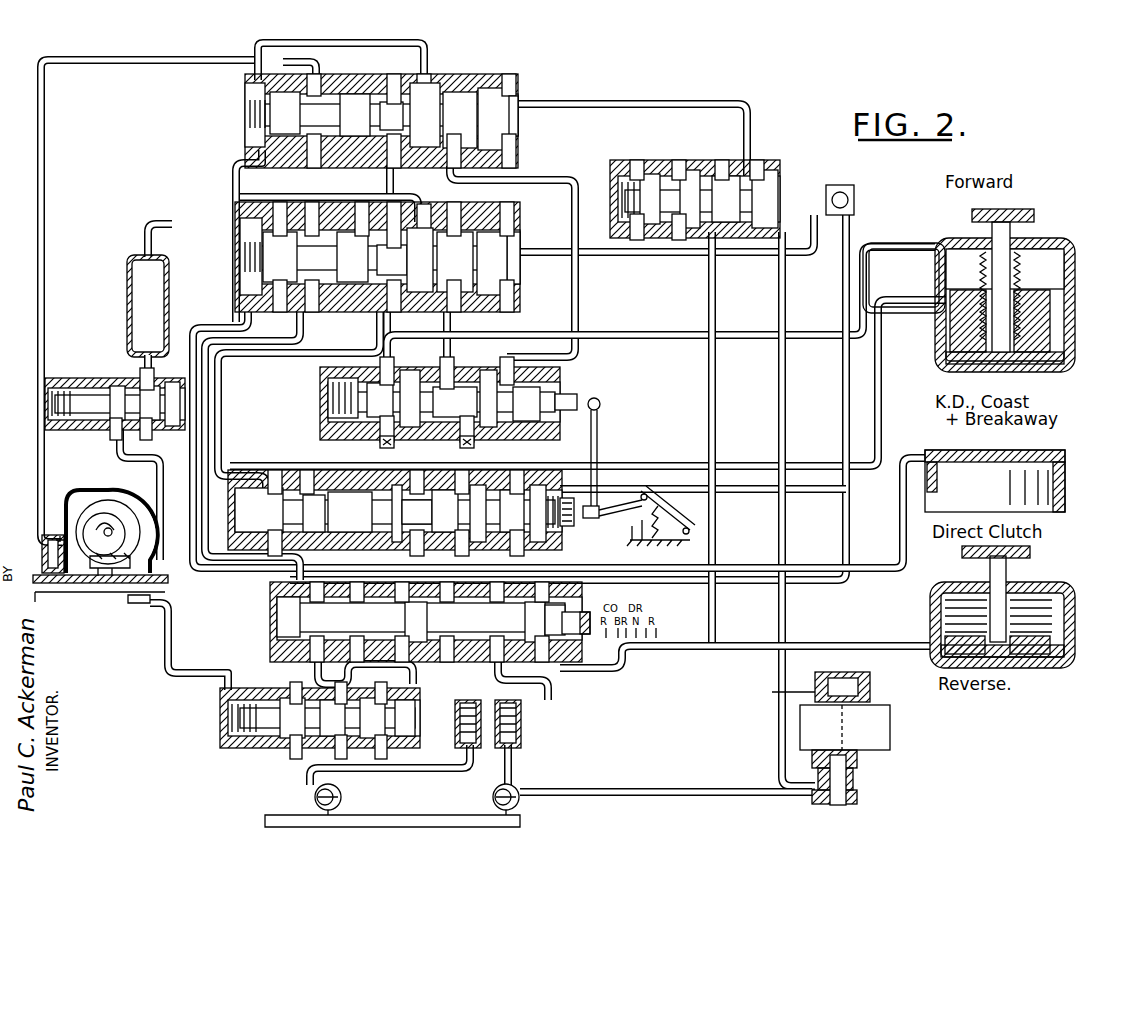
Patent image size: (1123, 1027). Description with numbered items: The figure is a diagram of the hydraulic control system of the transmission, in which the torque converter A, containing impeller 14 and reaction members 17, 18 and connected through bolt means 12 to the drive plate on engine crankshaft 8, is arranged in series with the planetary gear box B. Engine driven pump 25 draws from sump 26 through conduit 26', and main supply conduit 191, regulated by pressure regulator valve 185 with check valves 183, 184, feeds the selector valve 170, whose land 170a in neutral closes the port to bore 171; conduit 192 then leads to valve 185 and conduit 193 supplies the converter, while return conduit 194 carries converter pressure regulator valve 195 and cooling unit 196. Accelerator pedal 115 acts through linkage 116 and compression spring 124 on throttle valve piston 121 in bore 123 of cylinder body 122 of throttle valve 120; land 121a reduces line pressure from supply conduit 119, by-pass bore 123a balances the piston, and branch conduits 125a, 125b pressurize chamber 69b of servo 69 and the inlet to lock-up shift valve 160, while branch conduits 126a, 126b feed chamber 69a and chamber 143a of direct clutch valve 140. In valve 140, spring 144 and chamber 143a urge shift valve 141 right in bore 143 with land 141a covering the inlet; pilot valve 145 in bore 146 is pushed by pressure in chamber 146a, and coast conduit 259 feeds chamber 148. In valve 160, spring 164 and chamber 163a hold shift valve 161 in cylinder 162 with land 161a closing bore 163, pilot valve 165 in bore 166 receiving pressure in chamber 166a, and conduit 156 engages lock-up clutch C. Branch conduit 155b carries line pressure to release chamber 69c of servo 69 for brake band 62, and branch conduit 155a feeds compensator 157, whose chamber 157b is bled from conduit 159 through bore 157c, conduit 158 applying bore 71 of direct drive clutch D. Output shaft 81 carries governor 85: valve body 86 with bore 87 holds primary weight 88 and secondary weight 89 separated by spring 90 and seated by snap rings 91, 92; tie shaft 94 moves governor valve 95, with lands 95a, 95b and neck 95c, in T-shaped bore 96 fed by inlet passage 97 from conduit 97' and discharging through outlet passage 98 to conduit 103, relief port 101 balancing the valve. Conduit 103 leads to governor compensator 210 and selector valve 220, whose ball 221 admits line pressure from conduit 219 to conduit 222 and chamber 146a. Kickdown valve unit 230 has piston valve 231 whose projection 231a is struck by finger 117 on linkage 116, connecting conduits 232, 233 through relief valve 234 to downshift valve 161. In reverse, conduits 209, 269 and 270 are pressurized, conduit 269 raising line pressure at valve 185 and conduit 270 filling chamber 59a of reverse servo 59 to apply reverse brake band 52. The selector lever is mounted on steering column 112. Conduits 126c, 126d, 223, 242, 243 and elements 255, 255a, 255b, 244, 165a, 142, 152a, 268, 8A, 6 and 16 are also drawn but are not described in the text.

The suction conduit 156 is at (144, 60).
The line pressure conduit 126c is at (254, 52).
The conduit 161a is at (289, 78).
The conduit 223 is at (656, 104).
The conduit 222 is at (642, 258).
The conduit 233 is at (450, 172).
The conduit 232 is at (362, 157).
The conduit 126d is at (320, 194).
The conduit 126b is at (272, 283).
The conduit 242 is at (387, 339).
The conduit 243 is at (467, 339).
The conduit 155b is at (630, 332).
The conduit 126a is at (880, 338).
The conduit 219 is at (844, 408).
The conduit 125a is at (881, 432).
The governor pressure conduit 209 is at (640, 588).
The conduit 103 is at (775, 600).
The conduit 270 is at (548, 673).
The conduit 159 is at (262, 579).
The conduit 259 is at (306, 434).
The conduit 125b is at (228, 174).
The accumulator 196 is at (126, 304).
The conduit 193 is at (228, 671).
The conduit 192 is at (365, 662).
The conduit 191 is at (501, 670).
The conduit 194 is at (158, 468).
The conduit 97' is at (666, 780).
The shift valve 160 is at (382, 102).
The spring 164 is at (240, 118).
The valve spool 161 is at (339, 115).
The valve land 163a is at (248, 130).
The port 163 is at (316, 82).
The valve land 162 is at (374, 80).
The port 165a is at (440, 82).
The valve plug 165 is at (443, 115).
The valve land 166 is at (480, 80).
The chamber 166a is at (528, 100).
The shift valve 140 is at (371, 251).
The spring 144 is at (244, 248).
The valve land 143a is at (254, 260).
The port 142 is at (276, 219).
The valve land 141a is at (319, 219).
The valve spool 141 is at (334, 257).
The valve land 143 is at (375, 238).
The port 148 is at (432, 241).
The valve land 146 is at (470, 241).
The chamber 146a is at (533, 240).
The valve plug 145 is at (477, 248).
The regulator valve 231 is at (450, 400).
The spring 255 is at (328, 391).
The port 255a is at (291, 360).
The port 255b is at (349, 362).
The check valve 244 is at (404, 441).
The check valve 234 is at (488, 441).
The valve stem 230 is at (569, 386).
The valve land 231a is at (575, 398).
The throttle valve 121 is at (402, 456).
The valve land 152a is at (259, 505).
The valve plug 157 is at (246, 510).
The port 157b is at (219, 490).
The port 157c is at (219, 529).
The conduit 155a is at (257, 413).
The valve land 121a is at (421, 512).
The throttle valve plunger 120 is at (508, 502).
The valve land 123 is at (524, 505).
The spring 123a is at (539, 526).
The plunger 124 is at (582, 507).
The port 122 is at (493, 501).
The port 119 is at (404, 548).
The throttle lever 117 is at (606, 426).
The link 116 is at (626, 517).
The lever 115 is at (663, 515).
The manual valve 170 is at (448, 622).
The valve land 171 is at (322, 617).
The valve spool 170a is at (475, 622).
The servo valve 183 is at (337, 721).
The valve land 185 is at (411, 716).
The servo 184 is at (525, 724).
The conduit 268 is at (280, 666).
The conduit 269 is at (284, 680).
The sump 26 is at (364, 812).
The pump 25 is at (344, 798).
The sump 26' is at (528, 800).
The conduit 8A is at (521, 792).
The pressure regulator valve 195 is at (100, 378).
The pump A is at (112, 528).
The pump housing 14 is at (108, 532).
The pump rotor 12 is at (100, 534).
The pump vane 17 is at (103, 521).
The pump shaft 18 is at (140, 494).
The inlet C is at (54, 534).
The outlet B is at (42, 540).
The conduit 8 is at (11, 540).
The conduit 6 is at (38, 258).
The sump 16 is at (100, 593).
The valve 210 is at (782, 160).
The check valve body 221 is at (850, 200).
The check ball 220 is at (841, 194).
The forward clutch 69 is at (987, 288).
The piston 69c is at (1060, 266).
The spring 69a is at (1062, 330).
The clutch plate 69b is at (1064, 362).
The clutch shaft 62 is at (1033, 212).
The direct clutch D is at (1006, 469).
The band 71 is at (996, 452).
The reverse clutch 59 is at (1019, 614).
The clutch shaft 52 is at (1031, 556).
The clutch plate 59a is at (1066, 650).
The governor shaft 81 is at (831, 735).
The governor body 85 is at (804, 678).
The conduit 90 is at (775, 691).
The governor weight 94 is at (845, 727).
The governor valve 95 is at (859, 790).
The valve land 95a is at (857, 764).
The valve land 95c is at (899, 777).
The valve land 95b is at (840, 804).
The port 96 is at (845, 802).
The port 97 is at (774, 749).
The port 98 is at (806, 786).
The port 101 is at (812, 802).
The port 92 is at (816, 676).
The port 91 is at (841, 665).
The bore 87 is at (860, 674).
The valve 86 is at (872, 682).
The spring 89 is at (872, 692).
The valve land 88 is at (870, 702).
The conduit 158 is at (811, 582).
The conduit 112 is at (476, 403).